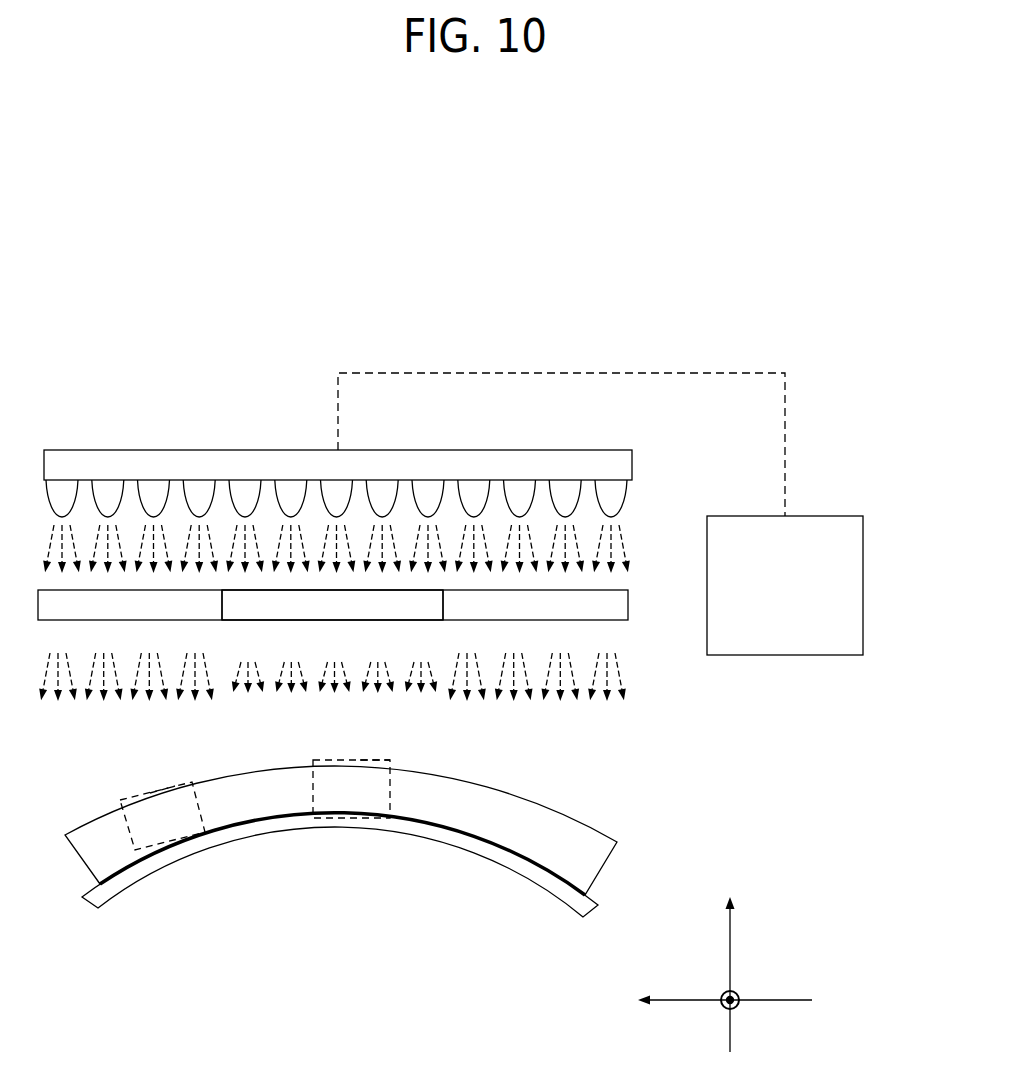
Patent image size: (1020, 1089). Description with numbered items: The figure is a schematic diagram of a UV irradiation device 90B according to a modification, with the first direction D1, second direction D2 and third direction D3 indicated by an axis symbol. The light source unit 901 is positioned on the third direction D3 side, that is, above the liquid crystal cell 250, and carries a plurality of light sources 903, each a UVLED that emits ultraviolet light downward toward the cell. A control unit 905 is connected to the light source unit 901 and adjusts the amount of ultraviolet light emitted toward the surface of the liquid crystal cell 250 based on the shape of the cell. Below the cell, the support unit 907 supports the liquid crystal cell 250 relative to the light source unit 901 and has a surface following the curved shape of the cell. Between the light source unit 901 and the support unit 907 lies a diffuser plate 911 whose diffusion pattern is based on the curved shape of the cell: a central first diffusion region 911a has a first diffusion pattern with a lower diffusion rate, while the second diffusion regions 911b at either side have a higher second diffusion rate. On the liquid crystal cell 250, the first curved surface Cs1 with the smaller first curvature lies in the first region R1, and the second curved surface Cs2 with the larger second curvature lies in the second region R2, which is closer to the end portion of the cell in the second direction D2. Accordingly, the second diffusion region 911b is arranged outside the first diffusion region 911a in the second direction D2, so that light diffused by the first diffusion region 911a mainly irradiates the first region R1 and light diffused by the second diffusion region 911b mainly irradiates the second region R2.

The UV irradiation device 90B is at (775, 335).
The light source unit 901 is at (158, 450).
The light sources 903 is at (628, 495).
The control unit 905 is at (818, 516).
The diffuser plate 911 is at (630, 599).
The first diffusion region 911a is at (345, 618).
The second diffusion region 911b is at (152, 618).
The liquid crystal cell 250 is at (563, 810).
The support unit 907 is at (380, 832).
The first region R1 is at (313, 760).
The second region R2 is at (120, 802).
The first curved surface Cs1 is at (383, 757).
The second curved surface Cs2 is at (169, 782).
The first direction D1 is at (712, 1015).
The second direction D2 is at (703, 999).
The third direction D3 is at (733, 959).